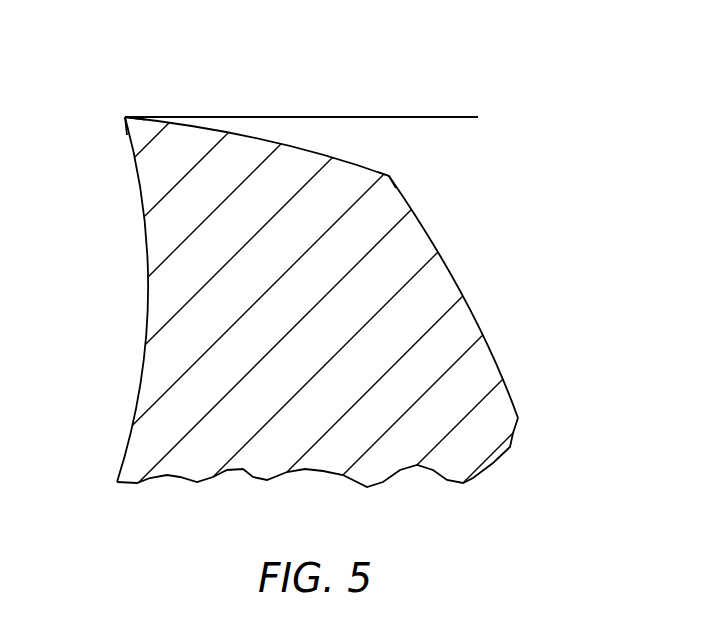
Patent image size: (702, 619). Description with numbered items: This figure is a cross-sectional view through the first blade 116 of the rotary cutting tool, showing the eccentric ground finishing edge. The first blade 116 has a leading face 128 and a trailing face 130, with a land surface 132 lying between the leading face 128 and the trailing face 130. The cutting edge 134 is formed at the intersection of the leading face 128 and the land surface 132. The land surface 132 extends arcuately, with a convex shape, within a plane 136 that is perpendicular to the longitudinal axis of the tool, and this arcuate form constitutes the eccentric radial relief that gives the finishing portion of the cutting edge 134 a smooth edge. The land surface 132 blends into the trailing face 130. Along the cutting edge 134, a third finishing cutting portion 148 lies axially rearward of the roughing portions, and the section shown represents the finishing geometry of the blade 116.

The first blade 116 is at (308, 252).
The leading face 128 is at (147, 300).
The trailing face 130 is at (482, 337).
The land surface 132 is at (332, 147).
The cutting edge 134 is at (125, 117).
The plane 136 is at (446, 116).
The third finishing cutting portion 148 is at (359, 168).